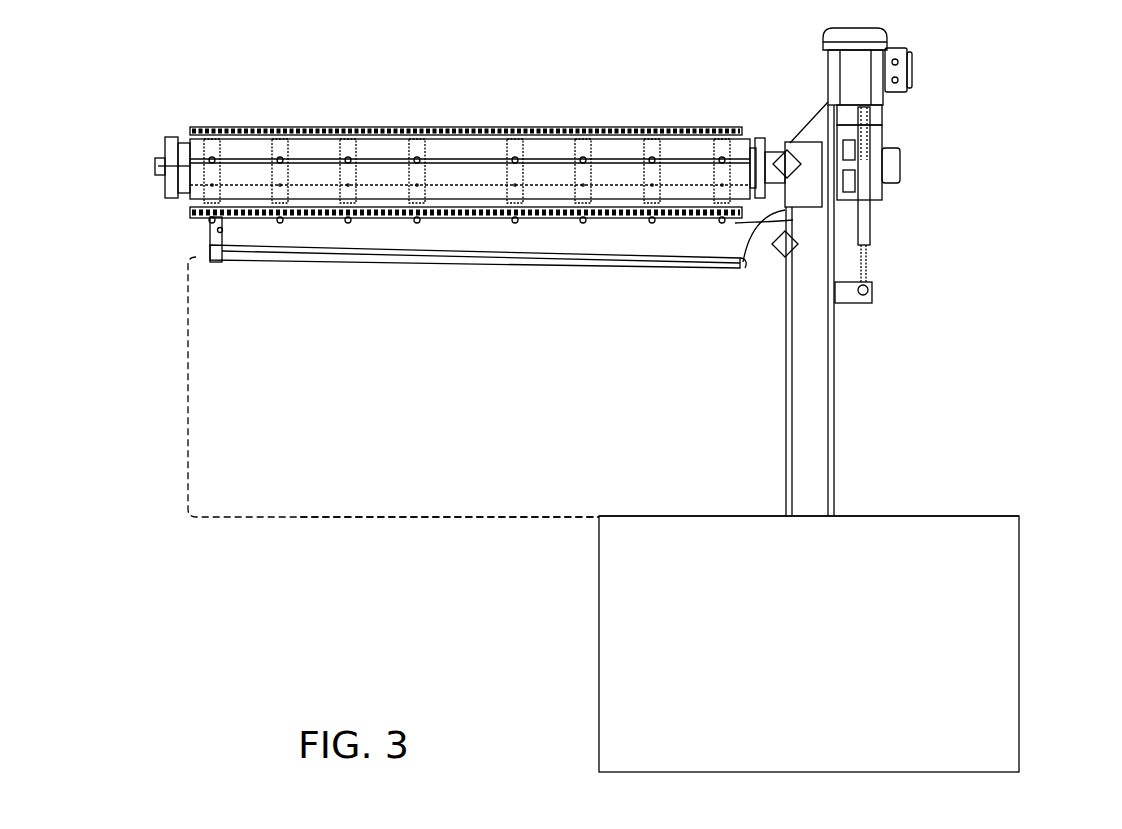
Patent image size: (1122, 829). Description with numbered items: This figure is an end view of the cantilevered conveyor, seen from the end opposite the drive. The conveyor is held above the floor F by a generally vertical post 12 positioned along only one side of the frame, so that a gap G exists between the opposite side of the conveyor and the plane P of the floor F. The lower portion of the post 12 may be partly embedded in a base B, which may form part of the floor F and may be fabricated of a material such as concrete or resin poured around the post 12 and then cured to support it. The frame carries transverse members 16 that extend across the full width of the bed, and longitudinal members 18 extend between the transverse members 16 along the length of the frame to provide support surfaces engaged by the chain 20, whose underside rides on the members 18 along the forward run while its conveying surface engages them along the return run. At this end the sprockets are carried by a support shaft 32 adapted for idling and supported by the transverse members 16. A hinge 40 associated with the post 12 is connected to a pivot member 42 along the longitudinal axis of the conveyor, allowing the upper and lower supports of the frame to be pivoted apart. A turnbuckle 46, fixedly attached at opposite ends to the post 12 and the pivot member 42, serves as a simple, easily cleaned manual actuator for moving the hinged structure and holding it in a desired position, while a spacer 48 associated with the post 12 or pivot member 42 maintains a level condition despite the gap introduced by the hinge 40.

The post 12 is at (834, 407).
The transverse member 16 is at (398, 263).
The longitudinal member 18 is at (278, 127).
The chain 20 is at (483, 127).
The support shaft 32 is at (155, 168).
The hinge 40 is at (898, 204).
The pivot member 42 is at (802, 124).
The turnbuckle 46 is at (870, 228).
The spacer 48 is at (770, 223).
The gap G is at (188, 350).
The plane P is at (398, 519).
The floor F is at (940, 515).
The base B is at (1020, 635).